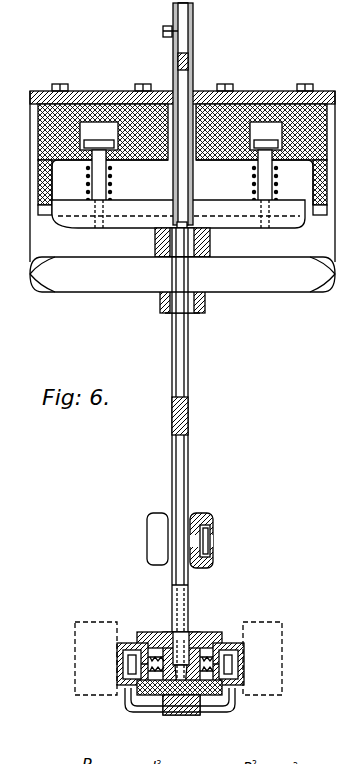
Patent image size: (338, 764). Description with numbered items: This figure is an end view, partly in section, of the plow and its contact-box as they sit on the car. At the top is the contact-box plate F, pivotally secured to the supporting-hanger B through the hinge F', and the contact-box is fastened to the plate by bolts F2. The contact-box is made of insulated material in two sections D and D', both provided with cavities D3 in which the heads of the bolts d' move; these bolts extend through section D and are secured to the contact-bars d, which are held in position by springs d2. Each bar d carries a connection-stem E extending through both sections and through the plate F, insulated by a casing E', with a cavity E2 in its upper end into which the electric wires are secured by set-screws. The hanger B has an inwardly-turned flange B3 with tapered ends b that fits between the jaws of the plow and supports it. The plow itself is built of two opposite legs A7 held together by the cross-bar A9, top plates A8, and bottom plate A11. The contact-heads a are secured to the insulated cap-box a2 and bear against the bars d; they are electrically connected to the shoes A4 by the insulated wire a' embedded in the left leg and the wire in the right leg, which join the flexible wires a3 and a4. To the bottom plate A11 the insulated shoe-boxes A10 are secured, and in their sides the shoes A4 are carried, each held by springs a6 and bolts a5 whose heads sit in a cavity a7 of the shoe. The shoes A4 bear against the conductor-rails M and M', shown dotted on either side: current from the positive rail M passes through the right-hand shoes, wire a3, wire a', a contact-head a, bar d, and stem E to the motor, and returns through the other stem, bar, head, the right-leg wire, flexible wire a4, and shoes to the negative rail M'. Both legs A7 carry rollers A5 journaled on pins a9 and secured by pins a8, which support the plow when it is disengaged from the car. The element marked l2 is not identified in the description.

The contact-box plate F is at (182, 86).
The bolts F2 is at (64, 84).
The hinge F' is at (268, 77).
The contact-box section D' is at (172, 176).
The contact-box section D is at (167, 187).
The cavities D3 is at (181, 163).
The bolts d' is at (158, 184).
The springs d2 is at (108, 184).
The contact-bars d is at (178, 224).
The insulating casing E' is at (196, 114).
The connection-stem E is at (165, 65).
The cavity E2 is at (173, 30).
The lever l2 is at (163, 33).
The contact-heads a is at (165, 239).
The insulated cap-box a2 is at (166, 298).
The top plates A8 is at (169, 314).
The supporting-hanger B is at (182, 264).
The tapered ends b is at (182, 274).
The inwardly-turned flange B3 is at (257, 274).
The insulated wire a' is at (192, 406).
The legs A7 is at (189, 368).
The cross-bar A9 is at (189, 420).
The rollers A5 is at (156, 530).
The pins a8 is at (212, 545).
The pins a9 is at (172, 541).
The bottom plate A11 is at (185, 640).
The springs a6 is at (152, 655).
The shoes A4 is at (117, 660).
The cavity a7 is at (118, 679).
The bolts a5 is at (236, 665).
The insulated shoe-boxes A10 is at (137, 641).
The flexible wire a4 is at (160, 705).
The flexible wire a3 is at (228, 704).
The conductor-rail M' is at (76, 658).
The conductor-rail M is at (271, 658).